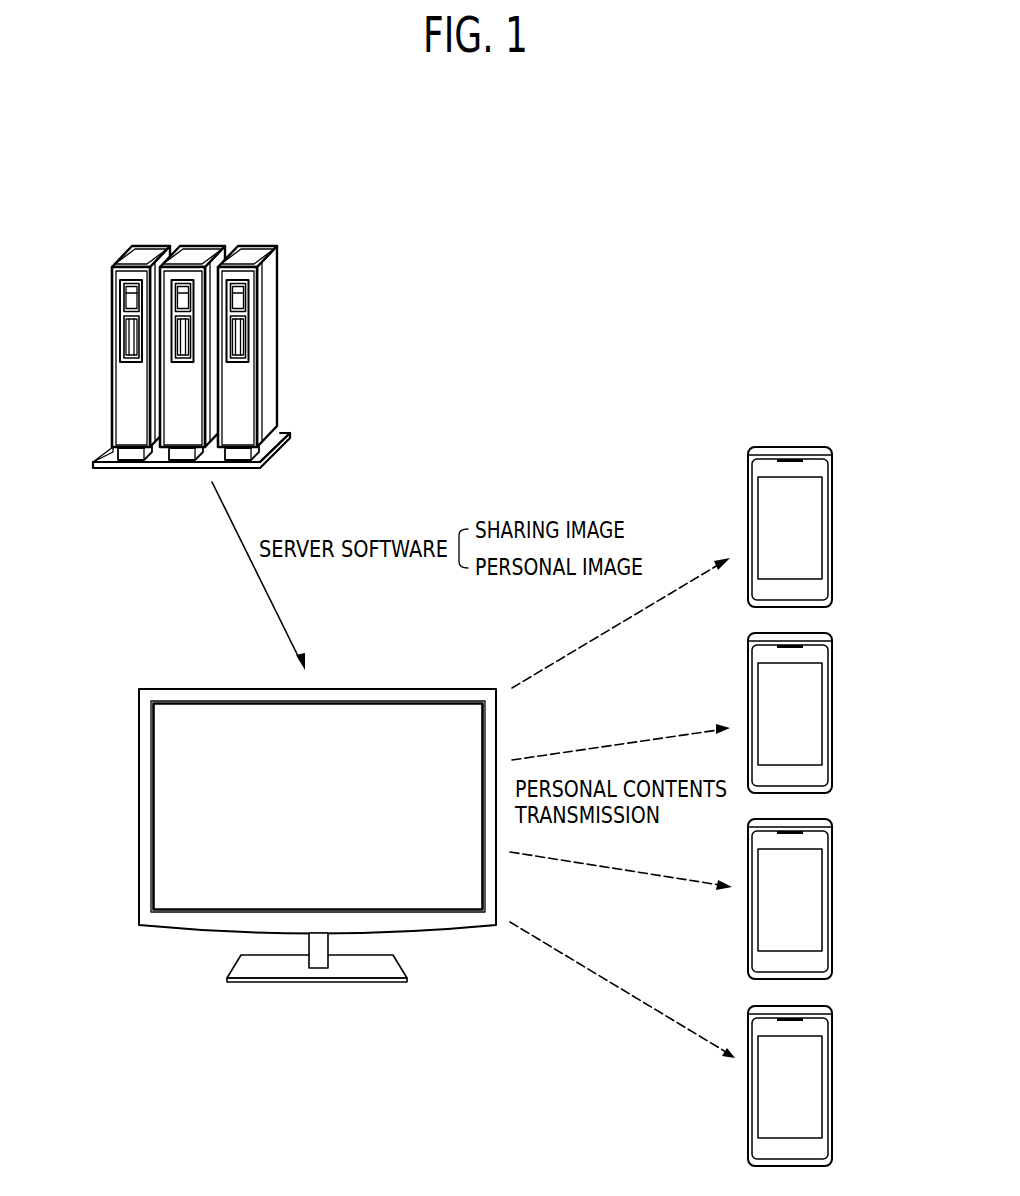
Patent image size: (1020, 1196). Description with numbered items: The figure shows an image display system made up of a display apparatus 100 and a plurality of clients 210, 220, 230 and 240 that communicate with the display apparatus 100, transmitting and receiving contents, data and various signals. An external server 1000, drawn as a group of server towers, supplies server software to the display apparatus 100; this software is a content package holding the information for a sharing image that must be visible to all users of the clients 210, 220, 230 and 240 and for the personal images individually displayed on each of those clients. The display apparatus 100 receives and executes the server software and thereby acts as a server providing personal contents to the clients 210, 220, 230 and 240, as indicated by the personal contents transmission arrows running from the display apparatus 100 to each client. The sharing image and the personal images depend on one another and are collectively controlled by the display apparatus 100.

The external server 1000 is at (310, 298).
The display apparatus 100 is at (110, 735).
The client 210 is at (832, 533).
The client 220 is at (832, 720).
The client 230 is at (832, 907).
The client 240 is at (832, 1093).